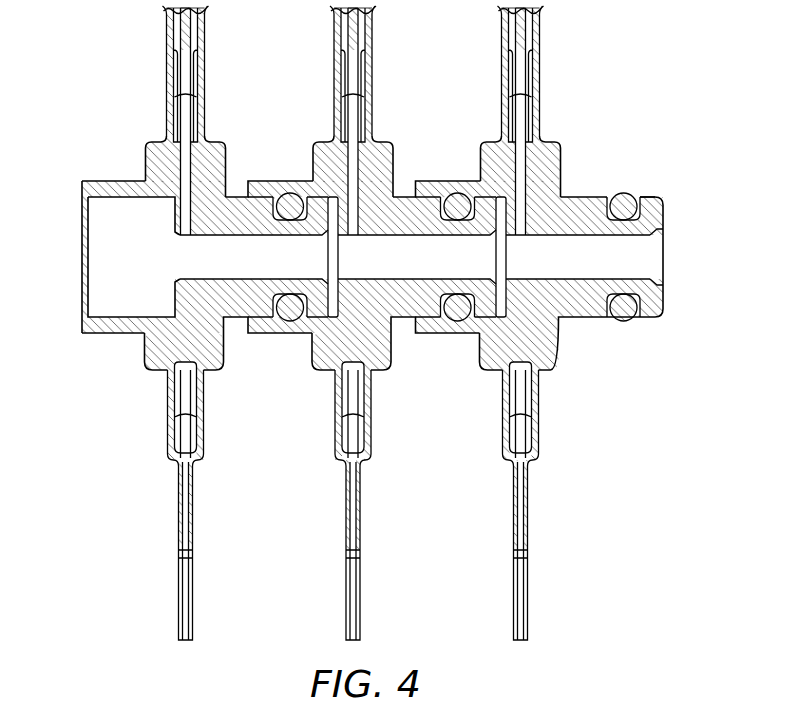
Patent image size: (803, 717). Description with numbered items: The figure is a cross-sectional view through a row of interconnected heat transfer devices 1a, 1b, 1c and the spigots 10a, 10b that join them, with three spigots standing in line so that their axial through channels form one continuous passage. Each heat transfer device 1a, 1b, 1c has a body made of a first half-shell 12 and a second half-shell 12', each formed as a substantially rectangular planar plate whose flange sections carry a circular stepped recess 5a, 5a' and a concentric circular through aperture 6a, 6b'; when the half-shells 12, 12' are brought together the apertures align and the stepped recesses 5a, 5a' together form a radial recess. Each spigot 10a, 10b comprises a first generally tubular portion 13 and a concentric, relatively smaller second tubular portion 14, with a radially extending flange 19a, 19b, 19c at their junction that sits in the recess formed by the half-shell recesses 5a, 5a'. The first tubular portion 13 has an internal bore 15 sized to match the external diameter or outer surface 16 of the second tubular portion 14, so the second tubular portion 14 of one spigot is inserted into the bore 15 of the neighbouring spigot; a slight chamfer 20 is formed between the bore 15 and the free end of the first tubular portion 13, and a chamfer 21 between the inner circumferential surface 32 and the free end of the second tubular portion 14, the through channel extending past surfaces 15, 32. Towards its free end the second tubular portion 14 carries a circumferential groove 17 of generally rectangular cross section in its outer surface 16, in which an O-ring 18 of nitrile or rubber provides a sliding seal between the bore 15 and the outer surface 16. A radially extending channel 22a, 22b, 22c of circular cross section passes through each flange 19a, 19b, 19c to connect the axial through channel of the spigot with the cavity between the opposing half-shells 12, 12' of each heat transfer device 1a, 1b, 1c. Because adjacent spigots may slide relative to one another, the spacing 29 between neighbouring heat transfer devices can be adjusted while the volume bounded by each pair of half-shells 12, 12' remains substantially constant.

The heat transfer device 1a is at (540, 101).
The heat transfer device 1b is at (372, 101).
The heat transfer device 1c is at (205, 101).
The circular stepped recess 5a is at (414, 162).
The circular stepped recess 5a' is at (291, 158).
The circular through aperture 6a is at (230, 318).
The circular through aperture 6b' is at (129, 354).
The spigot 10a is at (558, 322).
The spigot 10b is at (398, 334).
The first half-shell 12 is at (353, 20).
The second half-shell 12' is at (314, 20).
The first tubular portion 13 is at (82, 186).
The second tubular portion 14 is at (320, 308).
The internal bore 15 is at (82, 328).
The outer circumferential surface 16 is at (577, 317).
The circumferential groove 17 is at (637, 317).
The O-ring 18 is at (289, 311).
The radially extending flange 19a is at (503, 362).
The radially extending flange 19b is at (335, 362).
The radially extending flange 19c is at (168, 362).
The chamfer 20 is at (86, 258).
The chamfer 21 is at (665, 266).
The radially extending channel 22a is at (515, 167).
The radially extending channel 22b is at (348, 167).
The radially extending channel 22c is at (181, 167).
The spacing 29 is at (502, 55).
The inner circumferential surface 32 is at (628, 236).